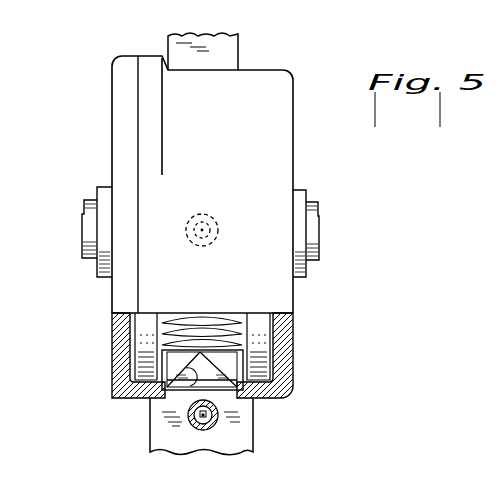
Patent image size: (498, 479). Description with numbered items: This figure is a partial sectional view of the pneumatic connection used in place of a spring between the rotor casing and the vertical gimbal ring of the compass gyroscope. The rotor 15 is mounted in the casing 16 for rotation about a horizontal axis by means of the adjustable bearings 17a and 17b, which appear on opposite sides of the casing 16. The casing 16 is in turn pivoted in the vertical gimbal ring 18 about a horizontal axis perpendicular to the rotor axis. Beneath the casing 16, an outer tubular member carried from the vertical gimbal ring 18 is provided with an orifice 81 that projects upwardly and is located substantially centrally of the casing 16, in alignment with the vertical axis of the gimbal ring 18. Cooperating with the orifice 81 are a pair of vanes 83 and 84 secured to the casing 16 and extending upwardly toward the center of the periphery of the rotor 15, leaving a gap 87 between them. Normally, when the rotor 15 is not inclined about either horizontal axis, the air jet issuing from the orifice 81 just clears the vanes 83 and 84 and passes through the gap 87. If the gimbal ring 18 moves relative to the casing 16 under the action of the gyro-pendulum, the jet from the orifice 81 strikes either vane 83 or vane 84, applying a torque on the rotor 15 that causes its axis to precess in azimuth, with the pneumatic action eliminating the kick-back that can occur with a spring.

The rotor 15 is at (258, 323).
The casing 16 is at (293, 115).
The adjustable bearing 17a is at (92, 233).
The adjustable bearing 17b is at (318, 230).
The vertical gimbal ring 18 is at (240, 50).
The orifice 81 is at (206, 397).
The vane 83 is at (190, 382).
The vane 84 is at (233, 353).
The gap 87 is at (200, 352).